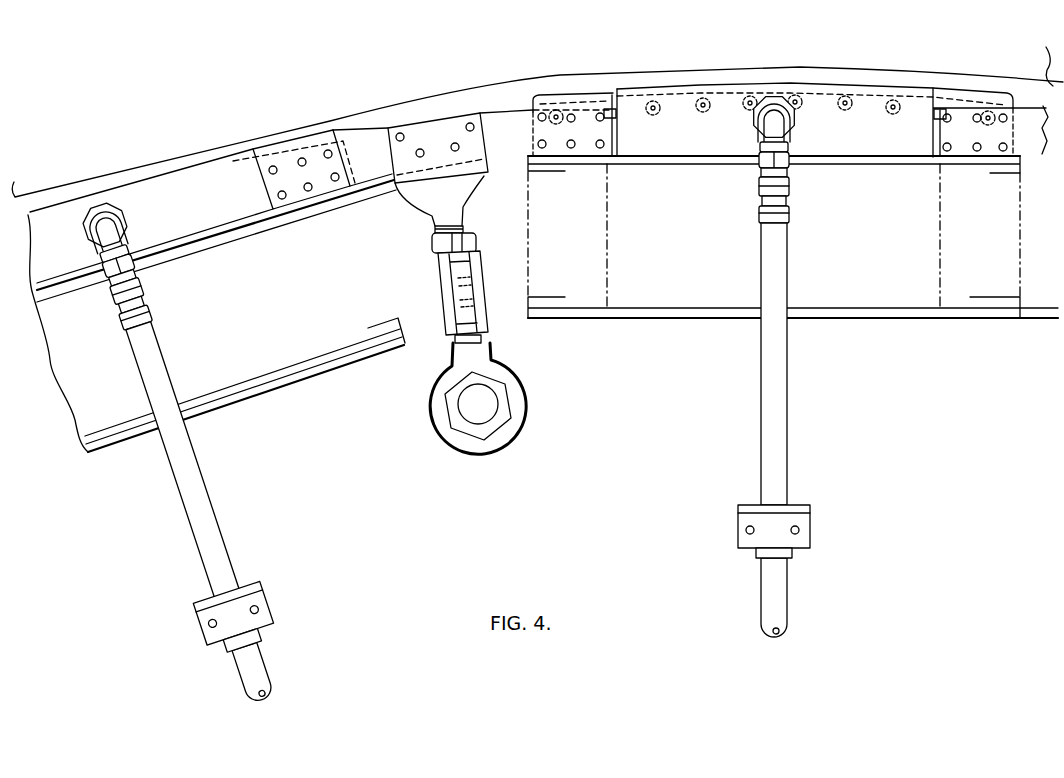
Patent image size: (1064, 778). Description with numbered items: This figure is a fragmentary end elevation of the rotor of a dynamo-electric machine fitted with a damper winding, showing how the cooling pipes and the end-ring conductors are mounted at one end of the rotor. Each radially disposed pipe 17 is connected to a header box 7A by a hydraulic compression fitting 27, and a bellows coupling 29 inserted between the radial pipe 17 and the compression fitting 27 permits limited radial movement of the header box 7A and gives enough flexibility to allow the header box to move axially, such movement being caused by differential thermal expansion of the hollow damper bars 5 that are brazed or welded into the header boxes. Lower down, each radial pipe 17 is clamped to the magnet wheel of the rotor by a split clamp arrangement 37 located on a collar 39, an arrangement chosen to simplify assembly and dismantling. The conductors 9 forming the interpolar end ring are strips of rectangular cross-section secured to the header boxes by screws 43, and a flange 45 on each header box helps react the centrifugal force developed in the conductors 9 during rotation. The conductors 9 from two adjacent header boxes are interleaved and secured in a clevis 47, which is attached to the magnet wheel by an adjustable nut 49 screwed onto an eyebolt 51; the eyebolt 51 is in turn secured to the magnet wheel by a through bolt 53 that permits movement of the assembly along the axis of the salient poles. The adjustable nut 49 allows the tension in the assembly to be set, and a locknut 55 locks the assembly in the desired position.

The damper bars 5 is at (895, 100).
The header box 7A is at (165, 182).
The conductors 9 is at (351, 140).
The radial pipe 17 is at (207, 518).
The hydraulic compression fitting 27 is at (129, 220).
The bellows coupling 29 is at (131, 286).
The split clamp arrangement 37 is at (803, 522).
The collar 39 is at (797, 553).
The screws 43 is at (601, 150).
The flange 45 is at (574, 130).
The clevis 47 is at (465, 198).
The adjustable nut 49 is at (478, 305).
The eyebolt 51 is at (512, 425).
The through bolt 53 is at (477, 415).
The locknut 55 is at (440, 256).